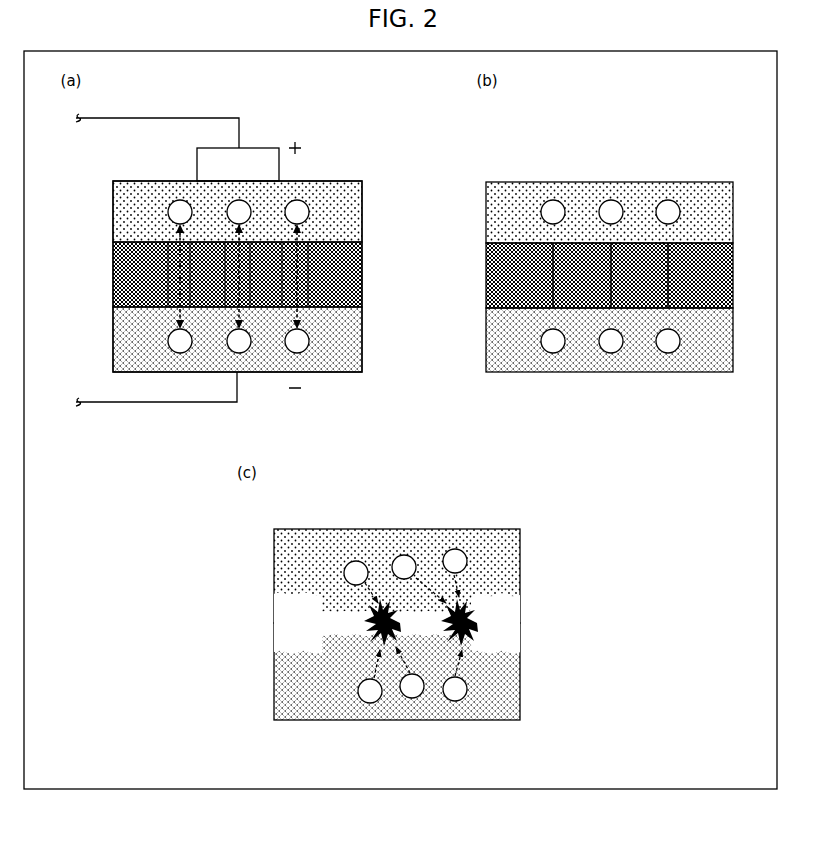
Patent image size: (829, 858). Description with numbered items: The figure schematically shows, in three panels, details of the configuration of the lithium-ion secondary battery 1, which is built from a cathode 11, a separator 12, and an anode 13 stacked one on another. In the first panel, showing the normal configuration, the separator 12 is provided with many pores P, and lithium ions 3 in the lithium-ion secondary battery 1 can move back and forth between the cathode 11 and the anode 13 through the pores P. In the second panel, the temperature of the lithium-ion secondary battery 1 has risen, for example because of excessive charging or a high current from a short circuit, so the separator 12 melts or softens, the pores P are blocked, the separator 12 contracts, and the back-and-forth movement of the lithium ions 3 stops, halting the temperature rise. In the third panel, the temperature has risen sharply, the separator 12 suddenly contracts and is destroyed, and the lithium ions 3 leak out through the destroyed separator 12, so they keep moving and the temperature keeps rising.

The lithium-ion secondary battery 1 is at (73, 181).
The lithium ions 3 is at (299, 203).
The cathode 11 is at (113, 211).
The separator 12 is at (113, 276).
The anode 13 is at (113, 341).
The pores P is at (302, 278).